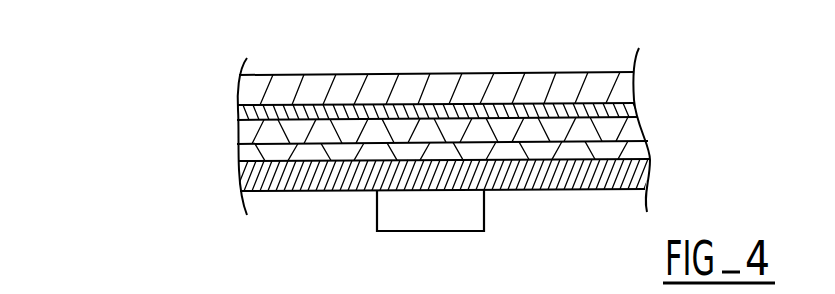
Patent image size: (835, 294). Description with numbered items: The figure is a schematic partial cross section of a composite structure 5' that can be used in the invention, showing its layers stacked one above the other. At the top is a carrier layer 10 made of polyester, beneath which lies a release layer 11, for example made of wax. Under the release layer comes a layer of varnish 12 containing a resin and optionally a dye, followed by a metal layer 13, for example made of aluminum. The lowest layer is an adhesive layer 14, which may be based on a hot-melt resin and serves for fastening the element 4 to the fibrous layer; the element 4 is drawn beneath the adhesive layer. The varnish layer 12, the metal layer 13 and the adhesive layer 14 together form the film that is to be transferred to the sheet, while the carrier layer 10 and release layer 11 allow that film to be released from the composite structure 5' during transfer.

The element 4 is at (442, 215).
The composite structure 5' is at (433, 111).
The carrier layer 10 is at (257, 93).
The release layer 11 is at (248, 115).
The layer of varnish 12 is at (252, 134).
The metal layer 13 is at (252, 156).
The adhesive layer 14 is at (257, 177).